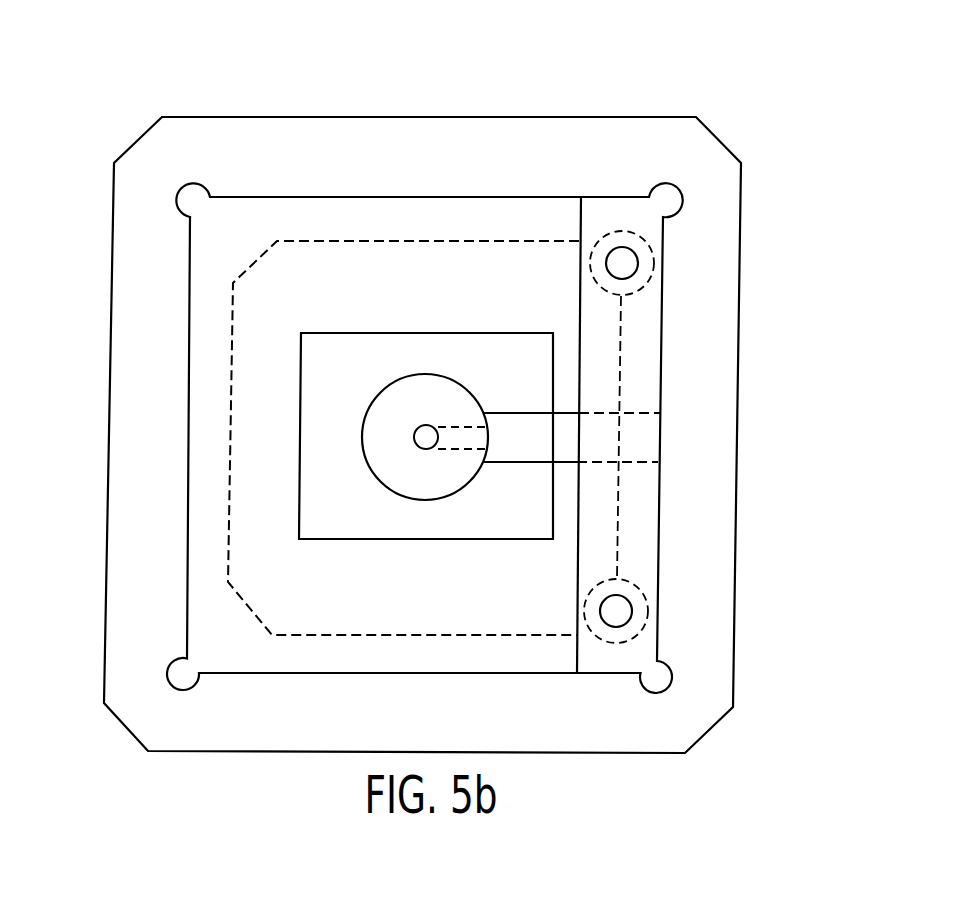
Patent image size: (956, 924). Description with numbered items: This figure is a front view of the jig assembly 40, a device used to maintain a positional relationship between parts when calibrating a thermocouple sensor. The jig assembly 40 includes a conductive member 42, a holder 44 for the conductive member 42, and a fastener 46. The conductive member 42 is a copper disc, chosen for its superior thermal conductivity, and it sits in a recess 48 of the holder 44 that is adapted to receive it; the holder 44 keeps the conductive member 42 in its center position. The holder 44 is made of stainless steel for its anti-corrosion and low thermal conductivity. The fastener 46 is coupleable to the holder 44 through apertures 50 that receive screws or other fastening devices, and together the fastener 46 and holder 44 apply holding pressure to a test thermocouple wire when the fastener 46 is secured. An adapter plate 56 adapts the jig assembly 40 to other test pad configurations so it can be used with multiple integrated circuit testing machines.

The jig assembly 40 is at (286, 88).
The conductive member 42 is at (436, 411).
The holder 44 is at (279, 287).
The fastener 46 is at (652, 331).
The recess 48 is at (362, 433).
The apertures 50 is at (638, 252).
The adapter plate 56 is at (270, 165).